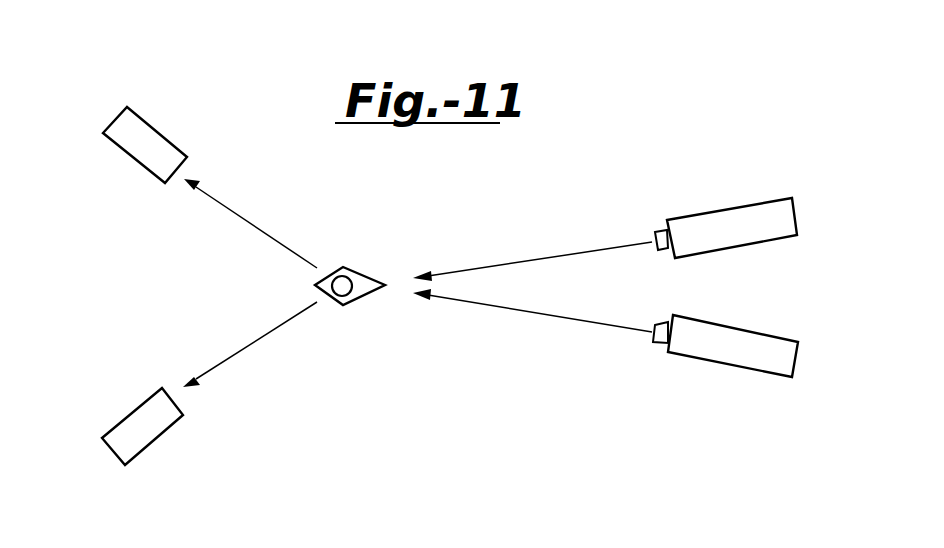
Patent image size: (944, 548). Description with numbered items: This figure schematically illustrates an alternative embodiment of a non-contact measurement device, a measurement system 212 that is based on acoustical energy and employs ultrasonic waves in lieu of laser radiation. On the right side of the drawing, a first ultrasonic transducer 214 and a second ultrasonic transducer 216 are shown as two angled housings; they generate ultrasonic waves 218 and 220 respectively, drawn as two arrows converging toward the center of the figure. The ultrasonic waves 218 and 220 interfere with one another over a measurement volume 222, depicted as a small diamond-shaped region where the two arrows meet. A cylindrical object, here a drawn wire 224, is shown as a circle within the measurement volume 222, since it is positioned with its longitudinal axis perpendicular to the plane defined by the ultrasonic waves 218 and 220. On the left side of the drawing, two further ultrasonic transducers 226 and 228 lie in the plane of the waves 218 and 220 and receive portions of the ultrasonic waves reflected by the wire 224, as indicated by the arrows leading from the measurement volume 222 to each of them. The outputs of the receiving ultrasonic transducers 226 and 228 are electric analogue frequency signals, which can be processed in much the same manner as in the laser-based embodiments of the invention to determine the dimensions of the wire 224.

The measurement system 212 is at (256, 119).
The first ultrasonic transducer 214 is at (718, 208).
The second ultrasonic transducer 216 is at (728, 365).
The ultrasonic wave 218 is at (565, 252).
The ultrasonic wave 220 is at (505, 308).
The measurement volume 222 is at (362, 272).
The drawn wire 224 is at (350, 295).
The ultrasonic transducer 226 is at (128, 157).
The ultrasonic transducer 228 is at (118, 417).